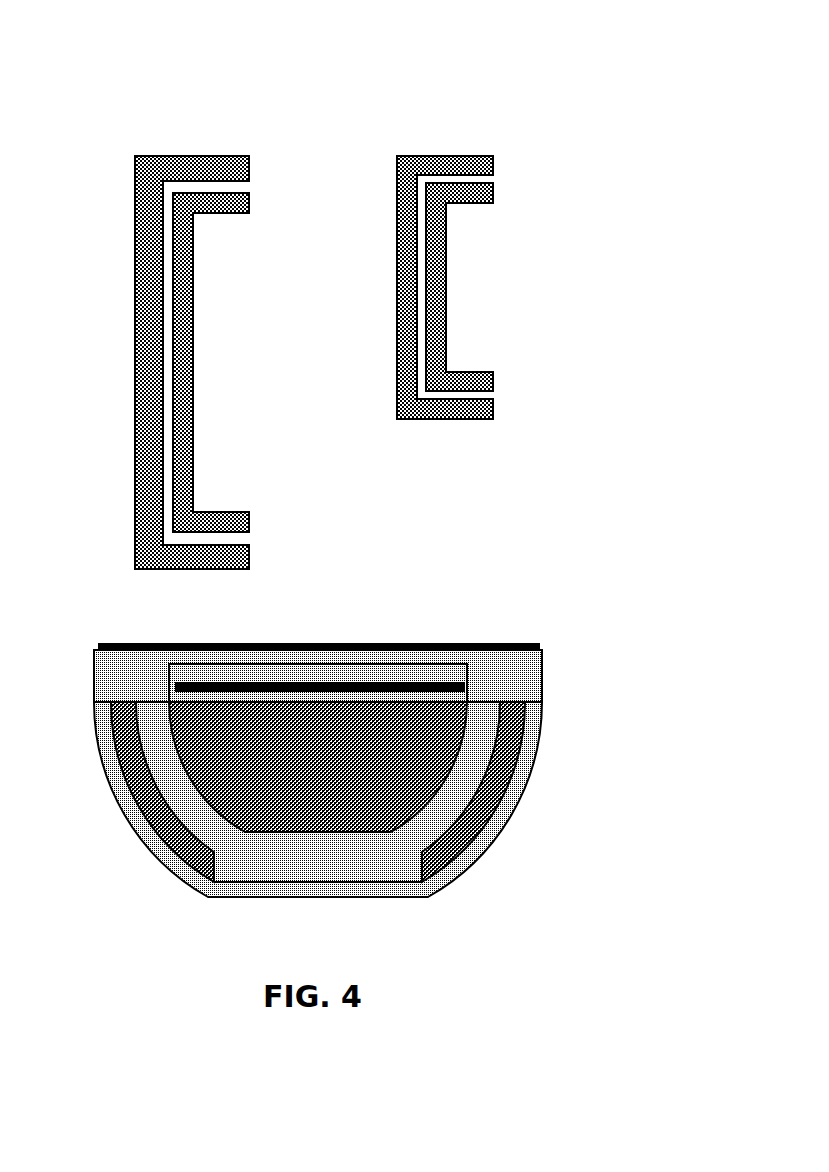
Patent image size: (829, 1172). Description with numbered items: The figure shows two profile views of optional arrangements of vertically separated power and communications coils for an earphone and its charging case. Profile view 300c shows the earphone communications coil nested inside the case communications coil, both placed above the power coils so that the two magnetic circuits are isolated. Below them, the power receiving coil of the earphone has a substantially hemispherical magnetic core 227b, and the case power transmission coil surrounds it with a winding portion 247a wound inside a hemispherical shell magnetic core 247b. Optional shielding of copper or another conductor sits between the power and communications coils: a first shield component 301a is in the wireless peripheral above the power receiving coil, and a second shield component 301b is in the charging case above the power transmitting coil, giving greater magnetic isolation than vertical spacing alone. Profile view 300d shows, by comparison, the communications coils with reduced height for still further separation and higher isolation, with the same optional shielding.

The profile view 300c is at (198, 293).
The profile view 300d is at (502, 232).
The magnetic core 227b is at (193, 664).
The winding portion 247a is at (133, 795).
The magnetic core 247b is at (156, 858).
The first shield component 301a is at (370, 693).
The second shield component 301b is at (305, 643).